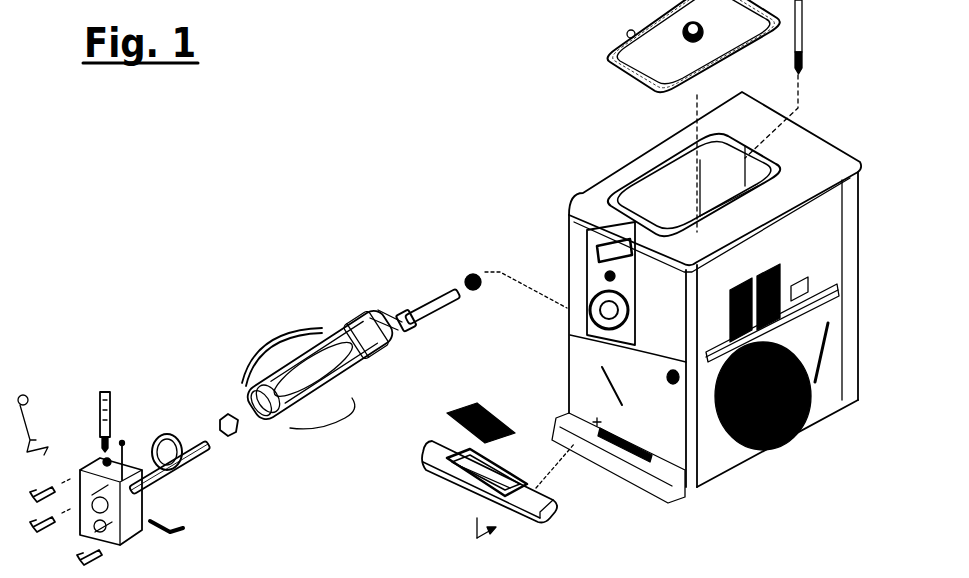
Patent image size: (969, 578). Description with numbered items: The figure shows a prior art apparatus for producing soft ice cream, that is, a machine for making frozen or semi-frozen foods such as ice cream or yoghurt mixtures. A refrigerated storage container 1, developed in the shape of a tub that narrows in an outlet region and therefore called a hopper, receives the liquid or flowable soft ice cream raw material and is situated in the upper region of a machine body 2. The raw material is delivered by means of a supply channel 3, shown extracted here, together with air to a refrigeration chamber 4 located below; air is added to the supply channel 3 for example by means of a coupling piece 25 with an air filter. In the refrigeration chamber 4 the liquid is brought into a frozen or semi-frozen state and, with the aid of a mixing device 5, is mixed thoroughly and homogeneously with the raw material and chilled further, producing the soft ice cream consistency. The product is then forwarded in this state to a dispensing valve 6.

The refrigerated storage container 1 is at (652, 190).
The machine body 2 is at (808, 232).
The supply channel 3 is at (810, 23).
The refrigeration chamber 4 is at (582, 310).
The mixing device 5 is at (282, 300).
The dispensing valve 6 is at (172, 505).
The coupling piece 25 is at (479, 292).